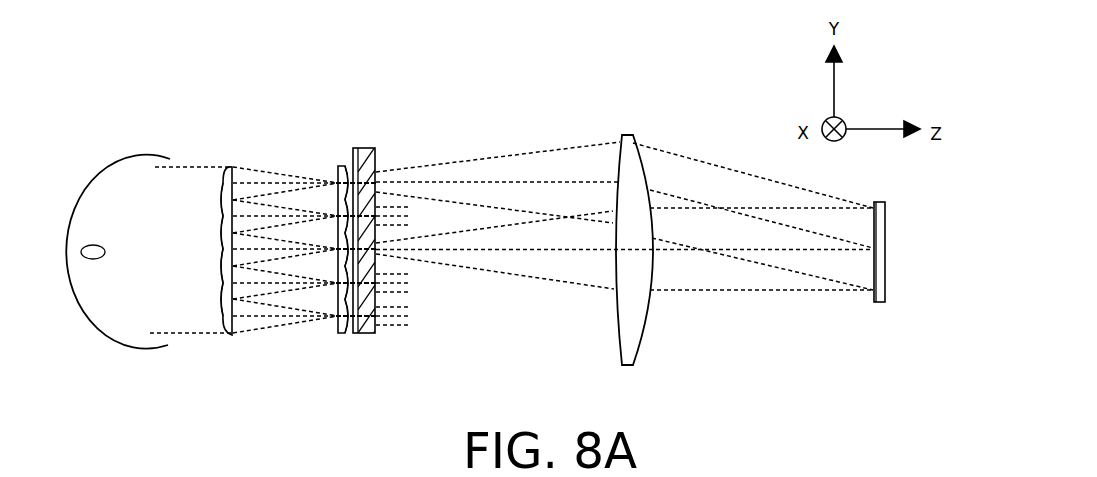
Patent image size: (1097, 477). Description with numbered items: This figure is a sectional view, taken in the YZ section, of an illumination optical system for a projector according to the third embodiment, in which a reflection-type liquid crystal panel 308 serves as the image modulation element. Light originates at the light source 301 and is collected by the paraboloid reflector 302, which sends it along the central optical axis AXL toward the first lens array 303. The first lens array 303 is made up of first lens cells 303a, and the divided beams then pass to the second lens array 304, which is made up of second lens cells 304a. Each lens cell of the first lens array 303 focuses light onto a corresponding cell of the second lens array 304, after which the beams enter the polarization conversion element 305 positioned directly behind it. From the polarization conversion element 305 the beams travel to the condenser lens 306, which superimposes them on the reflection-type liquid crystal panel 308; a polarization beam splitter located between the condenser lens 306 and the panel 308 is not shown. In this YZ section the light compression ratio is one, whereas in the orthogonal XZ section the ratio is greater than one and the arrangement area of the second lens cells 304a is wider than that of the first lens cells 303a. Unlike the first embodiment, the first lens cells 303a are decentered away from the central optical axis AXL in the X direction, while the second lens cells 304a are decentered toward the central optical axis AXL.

The light source 301 is at (92, 247).
The paraboloid reflector 302 is at (122, 320).
The first lens array 303 is at (228, 325).
The first lens cell 303a is at (218, 218).
The second lens array 304 is at (340, 330).
The second lens cell 304a is at (377, 192).
The polarization conversion element 305 is at (370, 333).
The condenser lens 306 is at (628, 298).
The reflection-type liquid crystal panel 308 is at (878, 302).
The central optical axis AXL is at (508, 250).